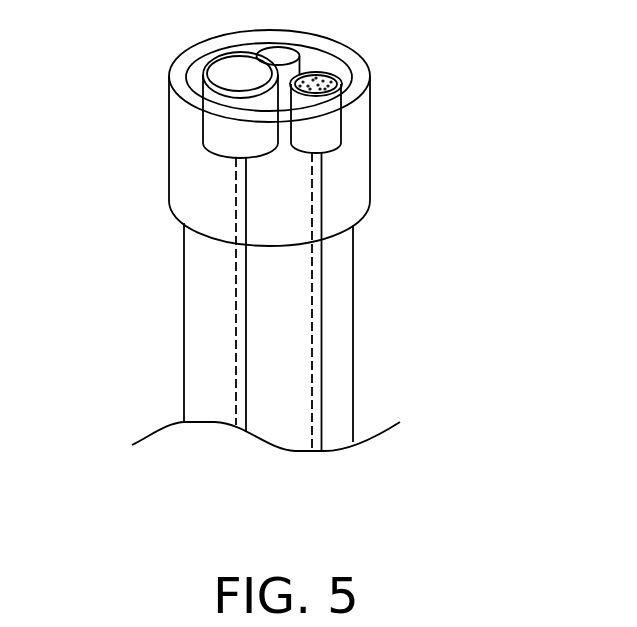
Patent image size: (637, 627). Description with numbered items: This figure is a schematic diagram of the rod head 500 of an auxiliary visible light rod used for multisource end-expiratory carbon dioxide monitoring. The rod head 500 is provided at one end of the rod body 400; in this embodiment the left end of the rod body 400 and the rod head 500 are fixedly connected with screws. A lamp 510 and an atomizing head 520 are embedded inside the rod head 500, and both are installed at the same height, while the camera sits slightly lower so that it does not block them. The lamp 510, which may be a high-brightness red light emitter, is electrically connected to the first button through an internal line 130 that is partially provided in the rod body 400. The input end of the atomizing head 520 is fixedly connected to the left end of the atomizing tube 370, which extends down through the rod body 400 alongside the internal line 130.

The rod head 500 is at (343, 188).
The lamp 510 is at (231, 138).
The atomizing head 520 is at (322, 132).
The rod body 400 is at (353, 289).
The internal line 130 is at (236, 292).
The atomizing tube 370 is at (315, 344).